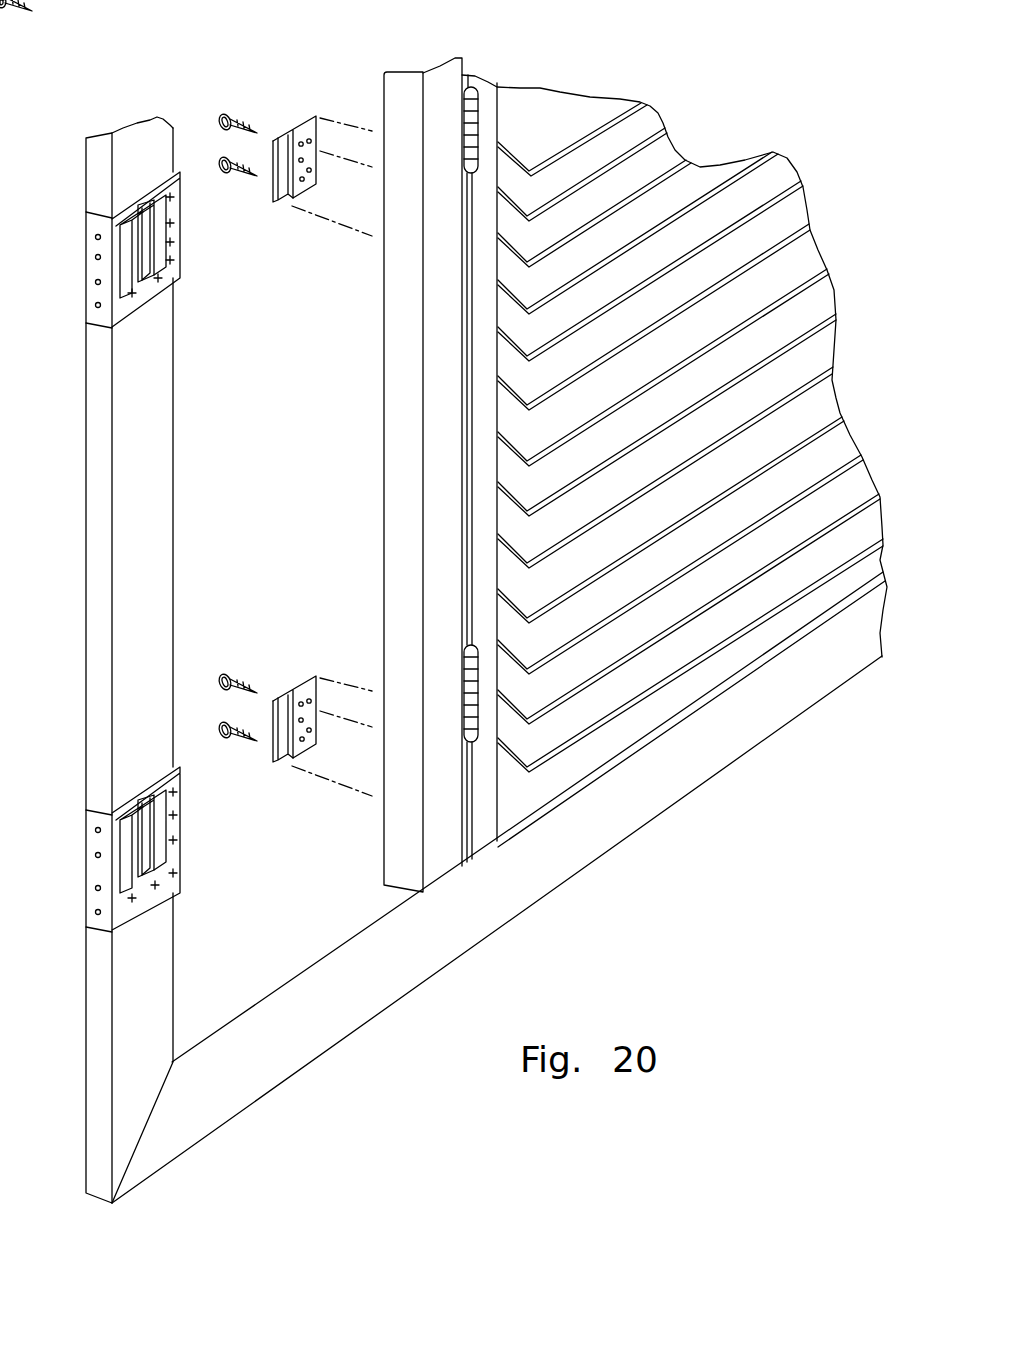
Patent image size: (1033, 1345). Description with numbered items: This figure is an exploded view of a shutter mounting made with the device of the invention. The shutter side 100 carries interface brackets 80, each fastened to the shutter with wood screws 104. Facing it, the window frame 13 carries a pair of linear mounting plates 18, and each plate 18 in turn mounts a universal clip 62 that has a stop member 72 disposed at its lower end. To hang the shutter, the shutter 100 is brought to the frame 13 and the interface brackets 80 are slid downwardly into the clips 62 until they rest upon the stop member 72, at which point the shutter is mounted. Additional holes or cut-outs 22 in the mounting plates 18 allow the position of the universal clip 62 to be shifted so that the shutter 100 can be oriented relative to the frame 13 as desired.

The window frame 13 is at (158, 462).
The linear mounting plate 18 is at (97, 262).
The holes or cut-outs 22 is at (172, 259).
The universal clip 62 is at (165, 214).
The stop member 72 is at (146, 274).
The interface bracket 80 is at (298, 122).
The shutter side 100 is at (402, 70).
The wood screw 104 is at (217, 164).